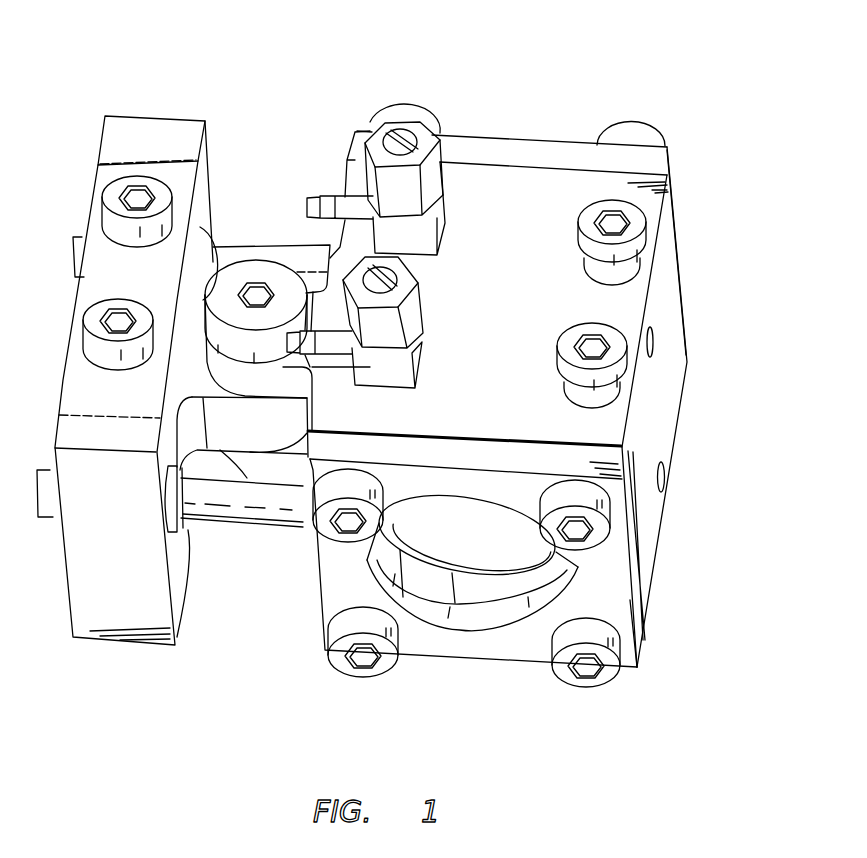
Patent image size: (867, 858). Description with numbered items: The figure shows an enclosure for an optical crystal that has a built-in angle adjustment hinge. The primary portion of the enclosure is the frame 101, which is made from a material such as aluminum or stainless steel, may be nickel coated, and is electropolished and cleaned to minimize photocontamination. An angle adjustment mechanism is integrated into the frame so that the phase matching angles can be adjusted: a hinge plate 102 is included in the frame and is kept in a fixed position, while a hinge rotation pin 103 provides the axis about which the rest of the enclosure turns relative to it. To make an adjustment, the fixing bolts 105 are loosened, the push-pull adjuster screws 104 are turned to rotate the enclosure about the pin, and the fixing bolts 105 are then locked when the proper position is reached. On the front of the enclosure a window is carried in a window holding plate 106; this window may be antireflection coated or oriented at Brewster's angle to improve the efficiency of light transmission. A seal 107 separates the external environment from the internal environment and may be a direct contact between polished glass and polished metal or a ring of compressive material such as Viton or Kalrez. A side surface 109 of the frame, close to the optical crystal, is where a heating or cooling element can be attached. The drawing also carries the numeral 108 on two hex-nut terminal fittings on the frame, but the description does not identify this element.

The frame 101 is at (498, 185).
The hinge plate 102 is at (126, 130).
The hinge rotation pin 103 is at (222, 287).
The adjuster screws 104 is at (223, 505).
The fixing bolts 105 is at (610, 364).
The window holding plate 106 is at (637, 622).
The seal 107 is at (517, 575).
The terminal nuts 108 is at (398, 265).
The surface 109 is at (667, 400).